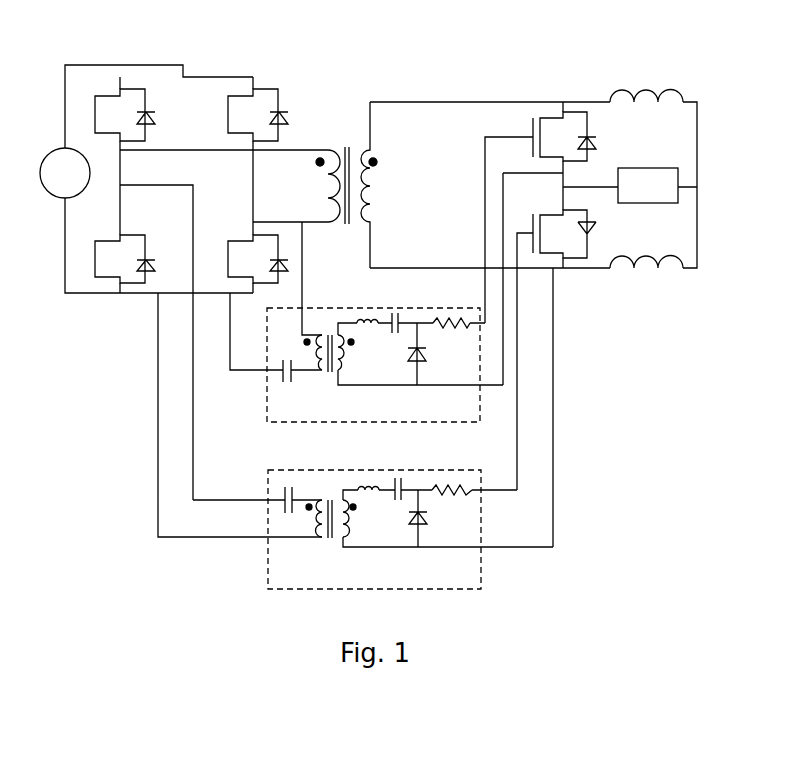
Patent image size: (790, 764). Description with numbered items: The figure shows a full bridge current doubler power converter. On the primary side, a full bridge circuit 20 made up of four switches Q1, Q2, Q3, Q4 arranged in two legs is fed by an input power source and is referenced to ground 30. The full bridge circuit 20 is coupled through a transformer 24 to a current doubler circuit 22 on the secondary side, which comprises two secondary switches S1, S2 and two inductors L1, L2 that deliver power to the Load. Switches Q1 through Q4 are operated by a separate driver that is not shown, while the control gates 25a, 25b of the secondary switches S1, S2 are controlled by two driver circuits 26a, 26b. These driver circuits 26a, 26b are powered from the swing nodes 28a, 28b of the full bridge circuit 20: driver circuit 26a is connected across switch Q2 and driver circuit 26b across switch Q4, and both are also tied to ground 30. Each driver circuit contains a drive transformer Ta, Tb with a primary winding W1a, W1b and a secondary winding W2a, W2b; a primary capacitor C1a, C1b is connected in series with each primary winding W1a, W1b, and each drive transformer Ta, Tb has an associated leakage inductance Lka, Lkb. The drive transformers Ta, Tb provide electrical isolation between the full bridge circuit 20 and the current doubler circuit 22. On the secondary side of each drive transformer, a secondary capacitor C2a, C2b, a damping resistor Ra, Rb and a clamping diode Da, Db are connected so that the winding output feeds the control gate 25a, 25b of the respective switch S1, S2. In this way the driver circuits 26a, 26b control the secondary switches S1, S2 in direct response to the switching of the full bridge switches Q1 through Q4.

The full bridge circuit 20 is at (191, 146).
The current doubler circuit 22 is at (533, 276).
The transformer 24 is at (347, 145).
The control gate 25a is at (531, 228).
The control gate 25b is at (533, 132).
The driver circuit 26a is at (355, 456).
The driver circuit 26b is at (360, 367).
The swing node 28a is at (122, 184).
The swing node 28b is at (270, 222).
The ground 30 is at (96, 294).
The full bridge switch Q1 is at (125, 115).
The full bridge switch Q2 is at (125, 259).
The full bridge switch Q3 is at (258, 115).
The full bridge switch Q4 is at (258, 259).
The secondary switch S1 is at (568, 234).
The secondary switch S2 is at (568, 136).
The inductor L1 is at (648, 98).
The inductor L2 is at (650, 268).
The load Load is at (648, 185).
The primary capacitor C1a is at (285, 490).
The primary capacitor C1b is at (283, 383).
The secondary capacitor C2a is at (403, 480).
The secondary capacitor C2b is at (400, 320).
The primary winding W1a is at (320, 525).
The primary winding W1b is at (313, 361).
The secondary winding W2a is at (369, 518).
The secondary winding W2b is at (365, 353).
The drive transformer Ta is at (330, 541).
The drive transformer Tb is at (325, 374).
The leakage inductance Lka is at (375, 480).
The leakage inductance Lkb is at (377, 317).
The damping resistor Ra is at (465, 492).
The damping resistor Rb is at (463, 328).
The clamping diode Da is at (408, 526).
The clamping diode Db is at (407, 367).